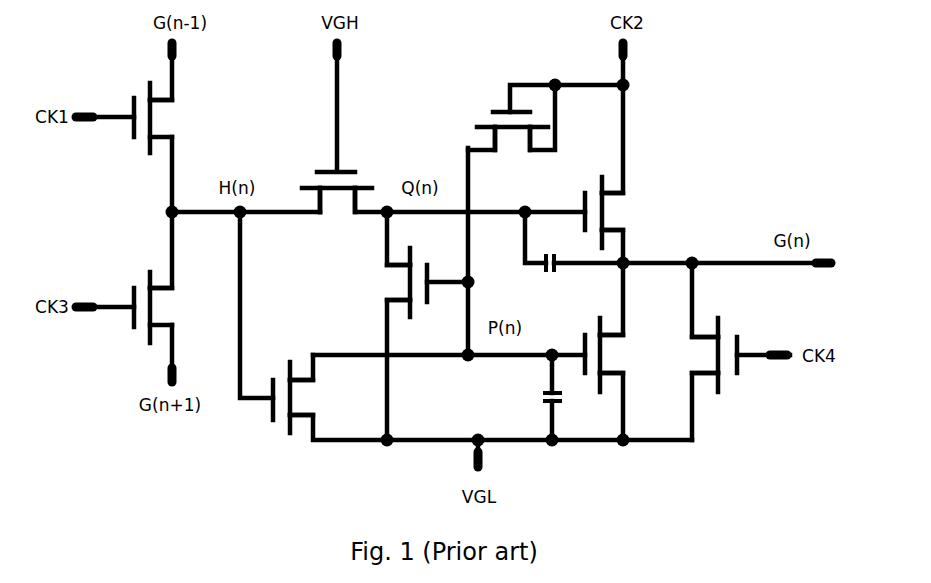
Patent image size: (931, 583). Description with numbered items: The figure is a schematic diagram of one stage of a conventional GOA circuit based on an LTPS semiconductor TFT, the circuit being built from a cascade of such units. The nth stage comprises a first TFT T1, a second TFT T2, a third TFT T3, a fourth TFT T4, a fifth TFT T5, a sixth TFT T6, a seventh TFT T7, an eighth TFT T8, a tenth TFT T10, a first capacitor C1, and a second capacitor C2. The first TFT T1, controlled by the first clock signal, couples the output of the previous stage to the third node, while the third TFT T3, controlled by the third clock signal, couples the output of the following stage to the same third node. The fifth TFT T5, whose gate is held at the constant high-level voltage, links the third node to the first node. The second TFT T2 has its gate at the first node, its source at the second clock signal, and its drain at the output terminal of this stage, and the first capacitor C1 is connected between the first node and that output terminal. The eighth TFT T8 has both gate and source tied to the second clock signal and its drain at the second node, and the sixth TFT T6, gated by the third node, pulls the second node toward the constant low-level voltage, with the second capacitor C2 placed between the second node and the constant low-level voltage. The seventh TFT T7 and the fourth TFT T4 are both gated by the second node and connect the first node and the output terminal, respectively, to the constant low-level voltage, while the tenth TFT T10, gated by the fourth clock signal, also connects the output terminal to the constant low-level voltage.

The first TFT T1 is at (169, 118).
The second TFT T2 is at (623, 212).
The third TFT T3 is at (169, 307).
The fourth TFT T4 is at (612, 355).
The fifth TFT T5 is at (337, 207).
The sixth TFT T6 is at (306, 397).
The seventh TFT T7 is at (395, 282).
The eighth TFT T8 is at (512, 141).
The tenth TFT T10 is at (698, 355).
The first capacitor C1 is at (550, 253).
The second capacitor C2 is at (535, 398).